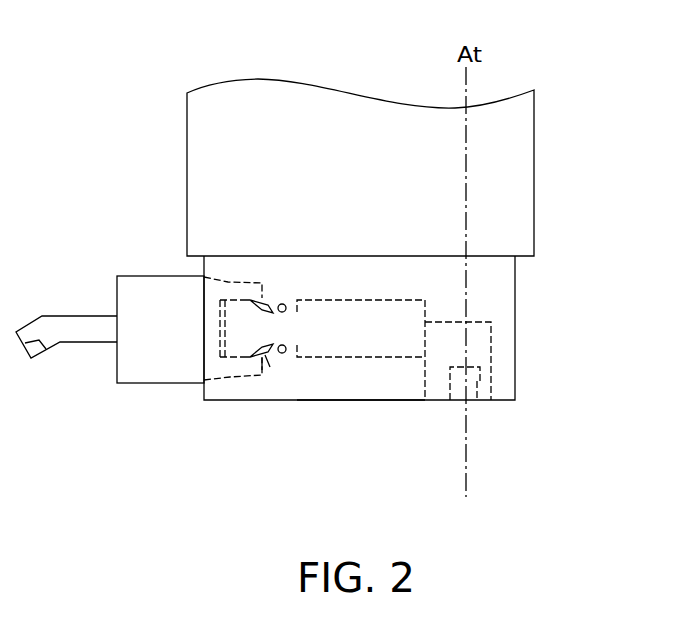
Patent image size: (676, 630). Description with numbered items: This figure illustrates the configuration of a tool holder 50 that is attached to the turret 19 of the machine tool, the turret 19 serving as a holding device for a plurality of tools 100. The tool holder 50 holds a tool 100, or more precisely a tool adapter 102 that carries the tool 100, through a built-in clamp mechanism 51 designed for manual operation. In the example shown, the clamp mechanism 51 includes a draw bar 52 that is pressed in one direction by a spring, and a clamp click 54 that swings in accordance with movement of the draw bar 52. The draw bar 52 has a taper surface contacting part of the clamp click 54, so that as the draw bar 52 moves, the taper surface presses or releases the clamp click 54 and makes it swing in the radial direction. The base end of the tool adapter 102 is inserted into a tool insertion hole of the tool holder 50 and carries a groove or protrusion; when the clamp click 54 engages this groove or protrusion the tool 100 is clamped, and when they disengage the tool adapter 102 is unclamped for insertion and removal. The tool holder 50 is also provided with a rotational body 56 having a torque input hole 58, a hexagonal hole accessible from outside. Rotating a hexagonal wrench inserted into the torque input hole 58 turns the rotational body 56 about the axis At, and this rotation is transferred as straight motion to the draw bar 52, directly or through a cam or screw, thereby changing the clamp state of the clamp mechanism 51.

The turret 19 is at (523, 148).
The tool holder 50 is at (510, 282).
The clamp mechanism 51 is at (393, 372).
The draw bar 52 is at (350, 360).
The clamp click 54 is at (268, 362).
The rotational body 56 is at (492, 358).
The torque input hole 58 is at (483, 376).
The tool 100 is at (73, 327).
The tool adapter 102 is at (212, 385).